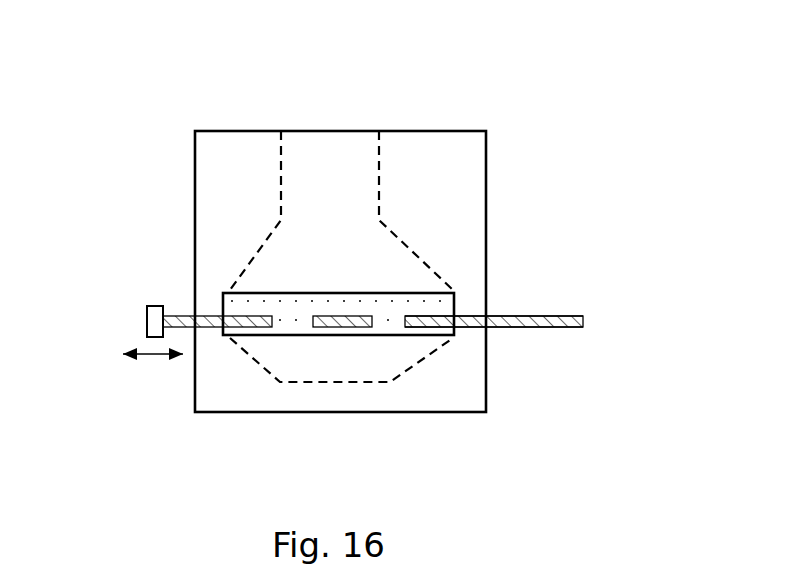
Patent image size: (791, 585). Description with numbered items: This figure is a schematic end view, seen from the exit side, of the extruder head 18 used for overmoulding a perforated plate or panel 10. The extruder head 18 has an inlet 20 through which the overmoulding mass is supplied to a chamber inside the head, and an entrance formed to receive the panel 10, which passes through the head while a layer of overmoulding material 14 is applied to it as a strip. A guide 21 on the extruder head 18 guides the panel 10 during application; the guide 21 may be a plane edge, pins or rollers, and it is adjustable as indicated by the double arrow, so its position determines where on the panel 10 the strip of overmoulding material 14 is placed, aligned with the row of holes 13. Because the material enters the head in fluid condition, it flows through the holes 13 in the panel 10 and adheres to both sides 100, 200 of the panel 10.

The panel 10 is at (568, 315).
The side of the panel 100 is at (517, 315).
The side of the panel 200 is at (523, 328).
The holes 13 is at (292, 323).
The overmoulding material 14 is at (242, 300).
The extruder head 18 is at (536, 141).
The inlet 20 is at (352, 163).
The guide 21 is at (147, 321).